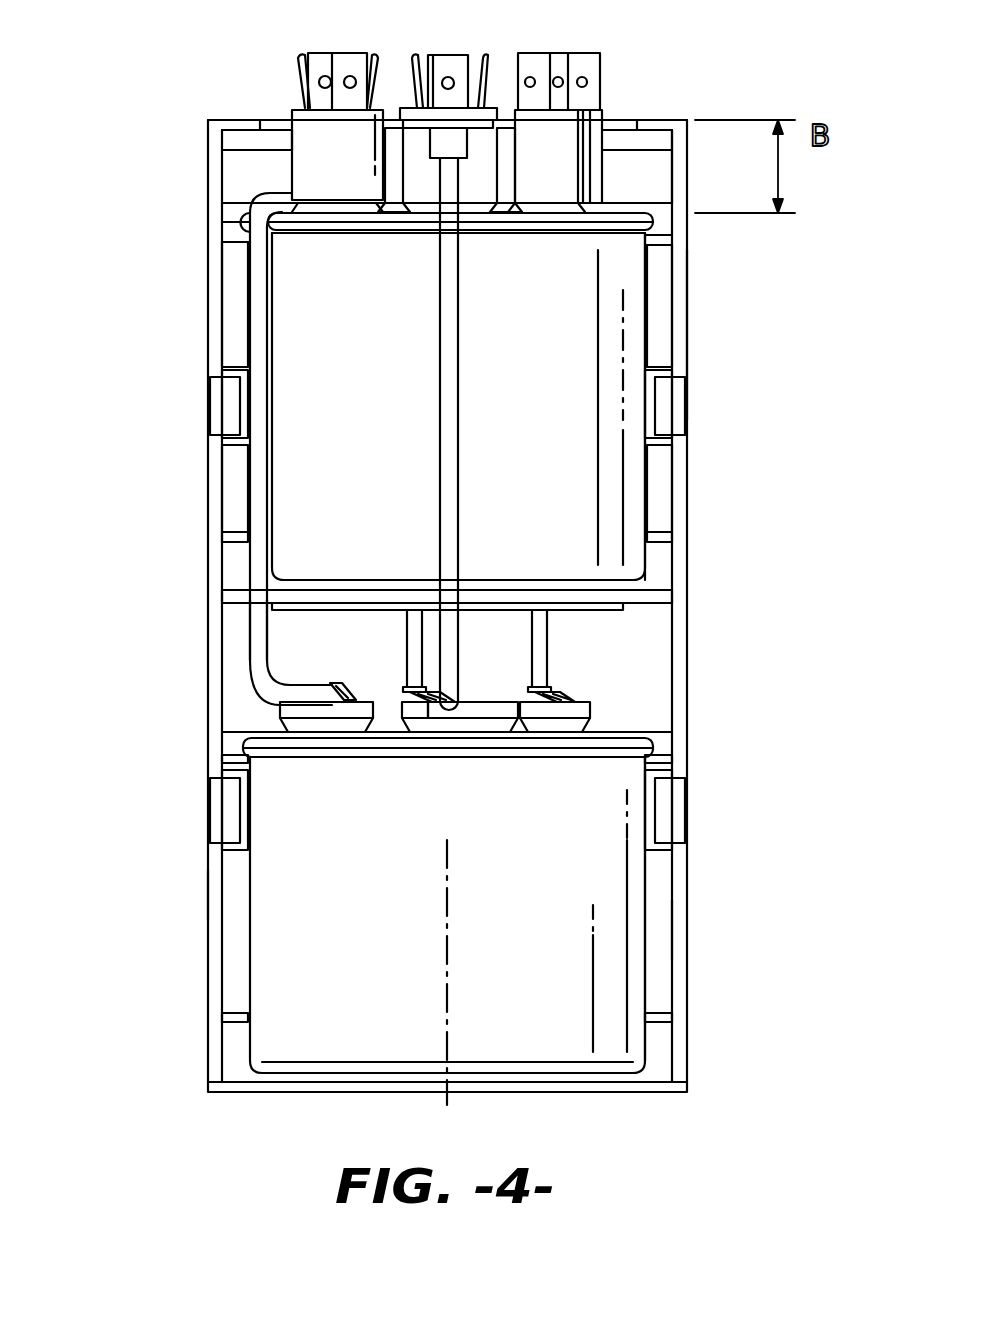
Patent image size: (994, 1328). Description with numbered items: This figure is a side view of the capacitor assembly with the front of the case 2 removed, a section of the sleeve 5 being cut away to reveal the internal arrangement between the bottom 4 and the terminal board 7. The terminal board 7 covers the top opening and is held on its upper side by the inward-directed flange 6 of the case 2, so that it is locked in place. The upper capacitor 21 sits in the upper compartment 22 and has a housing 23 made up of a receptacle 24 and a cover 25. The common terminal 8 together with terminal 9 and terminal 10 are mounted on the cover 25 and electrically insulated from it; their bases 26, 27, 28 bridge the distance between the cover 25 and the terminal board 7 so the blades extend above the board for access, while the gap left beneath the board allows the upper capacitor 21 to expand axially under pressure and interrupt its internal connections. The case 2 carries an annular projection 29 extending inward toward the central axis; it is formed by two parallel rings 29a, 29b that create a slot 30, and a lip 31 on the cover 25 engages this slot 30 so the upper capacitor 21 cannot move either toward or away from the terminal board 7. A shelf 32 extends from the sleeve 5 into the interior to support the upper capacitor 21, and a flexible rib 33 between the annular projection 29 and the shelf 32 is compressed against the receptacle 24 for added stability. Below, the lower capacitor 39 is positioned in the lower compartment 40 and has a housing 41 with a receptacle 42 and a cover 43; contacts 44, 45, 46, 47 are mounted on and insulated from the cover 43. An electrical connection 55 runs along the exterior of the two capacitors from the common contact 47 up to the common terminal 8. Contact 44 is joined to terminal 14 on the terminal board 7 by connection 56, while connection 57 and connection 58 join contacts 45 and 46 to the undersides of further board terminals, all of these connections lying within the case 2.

The case 2 is at (700, 157).
The bottom 4 is at (290, 1092).
The sleeve 5 is at (206, 170).
The flange 6 is at (653, 120).
The terminal board 7 is at (247, 133).
The terminal (common) 8 is at (340, 125).
The terminal 9 is at (483, 160).
The terminal 10 is at (597, 132).
The terminal 14 is at (448, 117).
The upper capacitor 21 is at (292, 340).
The upper compartment 22 is at (688, 325).
The housing 23 is at (298, 480).
The receptacle 24 is at (305, 285).
The cover 25 is at (292, 220).
The base 26 is at (298, 140).
The base 27 is at (413, 150).
The base 28 is at (542, 125).
The annular projection 29 is at (231, 222).
The ring 29a is at (668, 222).
The ring 29b is at (665, 248).
The slot 30 is at (220, 128).
The lip 31 is at (620, 235).
The shelf 32 is at (230, 597).
The flexible rib 33 is at (222, 548).
The lower capacitor 39 is at (283, 935).
The lower compartment 40 is at (235, 898).
The housing 41 is at (648, 957).
The receptacle 42 is at (617, 880).
The cover 43 is at (618, 735).
The contact 44 is at (472, 712).
The contact 45 is at (578, 698).
The contact 46 is at (410, 712).
The common contact 47 is at (322, 713).
The electrical connection 55 is at (250, 645).
The connection 56 is at (456, 492).
The connection 57 is at (530, 672).
The connection 58 is at (402, 675).